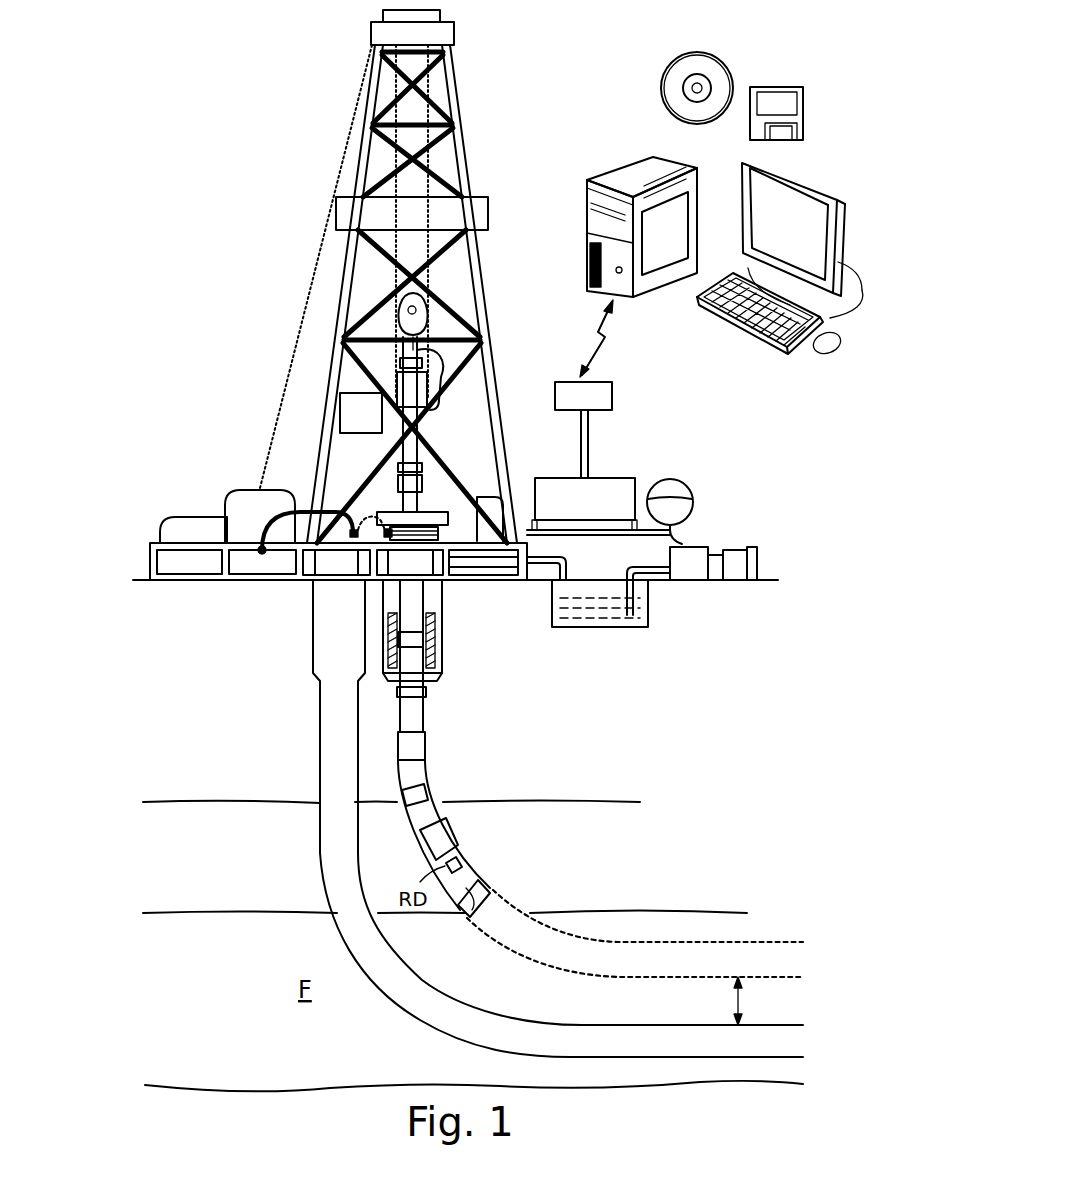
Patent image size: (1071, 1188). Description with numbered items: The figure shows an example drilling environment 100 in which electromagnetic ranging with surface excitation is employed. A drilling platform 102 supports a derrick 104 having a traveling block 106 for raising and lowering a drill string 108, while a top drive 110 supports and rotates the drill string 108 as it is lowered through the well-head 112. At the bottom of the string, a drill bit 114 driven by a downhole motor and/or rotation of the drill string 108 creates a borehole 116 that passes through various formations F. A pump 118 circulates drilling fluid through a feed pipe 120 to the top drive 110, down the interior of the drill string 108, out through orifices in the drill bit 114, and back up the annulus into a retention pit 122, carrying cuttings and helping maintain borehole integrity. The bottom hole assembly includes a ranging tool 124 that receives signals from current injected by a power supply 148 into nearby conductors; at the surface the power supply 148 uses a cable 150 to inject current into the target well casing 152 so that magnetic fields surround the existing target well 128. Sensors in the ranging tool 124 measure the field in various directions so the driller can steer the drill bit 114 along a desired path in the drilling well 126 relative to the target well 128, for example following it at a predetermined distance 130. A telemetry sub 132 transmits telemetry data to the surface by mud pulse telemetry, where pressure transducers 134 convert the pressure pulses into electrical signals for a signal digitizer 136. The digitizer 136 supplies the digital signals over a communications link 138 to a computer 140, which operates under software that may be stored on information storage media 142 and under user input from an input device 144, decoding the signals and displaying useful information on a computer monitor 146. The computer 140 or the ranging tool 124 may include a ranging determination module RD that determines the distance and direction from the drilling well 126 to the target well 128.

The drilling environment 100 is at (243, 140).
The drilling platform 102 is at (150, 560).
The derrick 104 is at (462, 130).
The traveling block 106 is at (428, 315).
The drill string 108 is at (418, 710).
The top drive 110 is at (413, 385).
The well-head 112 is at (388, 512).
The drill bit 114 is at (488, 890).
The borehole 116 is at (430, 768).
The pump 118 is at (727, 548).
The feed pipe 120 is at (645, 540).
The retention pit 122 is at (595, 615).
The ranging tool 124 is at (470, 870).
The drilling well 126 is at (610, 940).
The target well 128 is at (447, 1027).
The predetermined distance 130 is at (759, 1001).
The telemetry sub 132 is at (445, 840).
The pressure transducer 134 is at (630, 520).
The signal digitizer 136 is at (583, 396).
The communications link 138 is at (614, 338).
The computer 140 is at (679, 278).
The information storage media 142 is at (772, 87).
The input device 144 is at (770, 342).
The computer monitor 146 is at (802, 240).
The power supply 148 is at (255, 582).
The cable 150 is at (277, 512).
The target well casing 152 is at (313, 643).